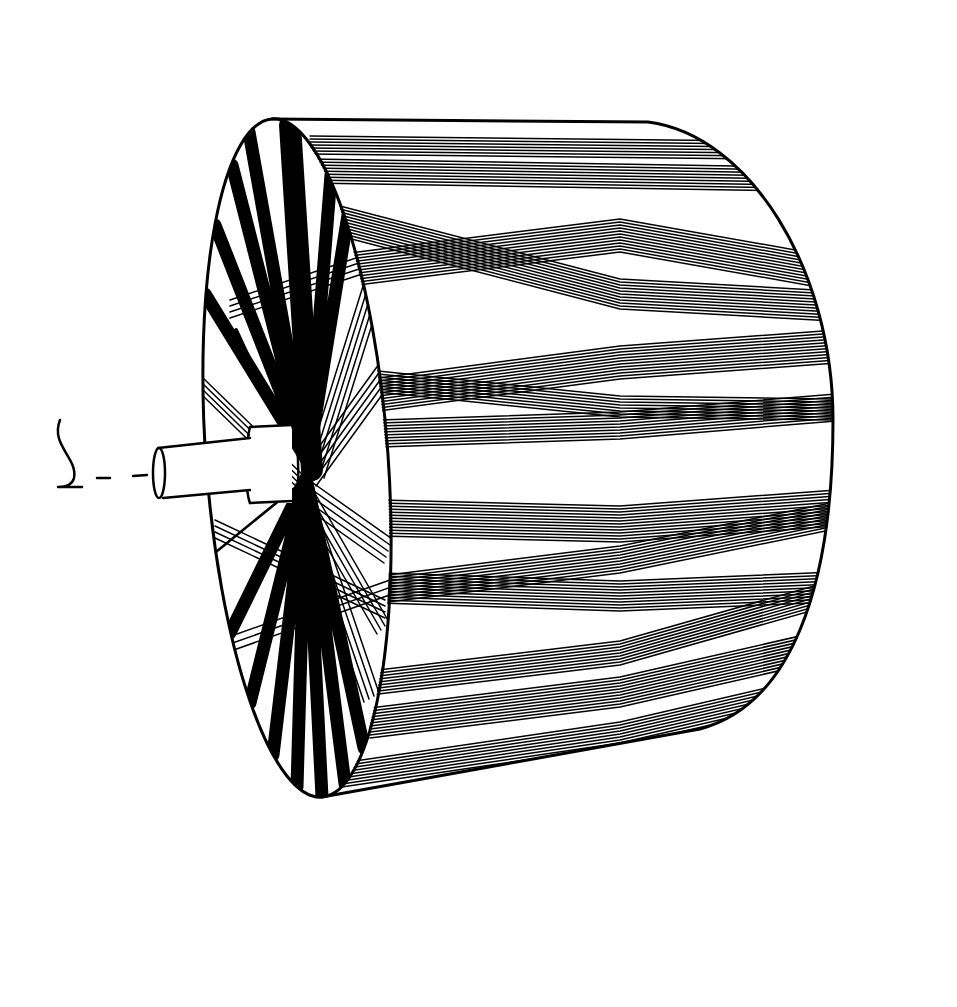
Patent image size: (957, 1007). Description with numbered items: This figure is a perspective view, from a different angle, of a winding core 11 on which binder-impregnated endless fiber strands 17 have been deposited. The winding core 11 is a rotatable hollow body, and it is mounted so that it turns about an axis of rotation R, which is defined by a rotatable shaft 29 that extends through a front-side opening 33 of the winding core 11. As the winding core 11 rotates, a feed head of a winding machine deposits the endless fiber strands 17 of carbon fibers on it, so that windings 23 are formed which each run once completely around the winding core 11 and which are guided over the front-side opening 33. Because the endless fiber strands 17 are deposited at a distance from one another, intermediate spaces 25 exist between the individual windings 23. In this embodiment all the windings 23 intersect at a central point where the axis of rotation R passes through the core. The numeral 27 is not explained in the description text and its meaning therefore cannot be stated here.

The winding core 11 is at (408, 112).
The endless fiber strands 17 is at (300, 150).
The windings 23 is at (722, 283).
The intermediate spaces 25 is at (692, 205).
The fiber band crossing 27 is at (650, 240).
The rotatable shaft 29 is at (183, 478).
The front-side opening 33 is at (213, 350).
The axis of rotation R is at (102, 429).